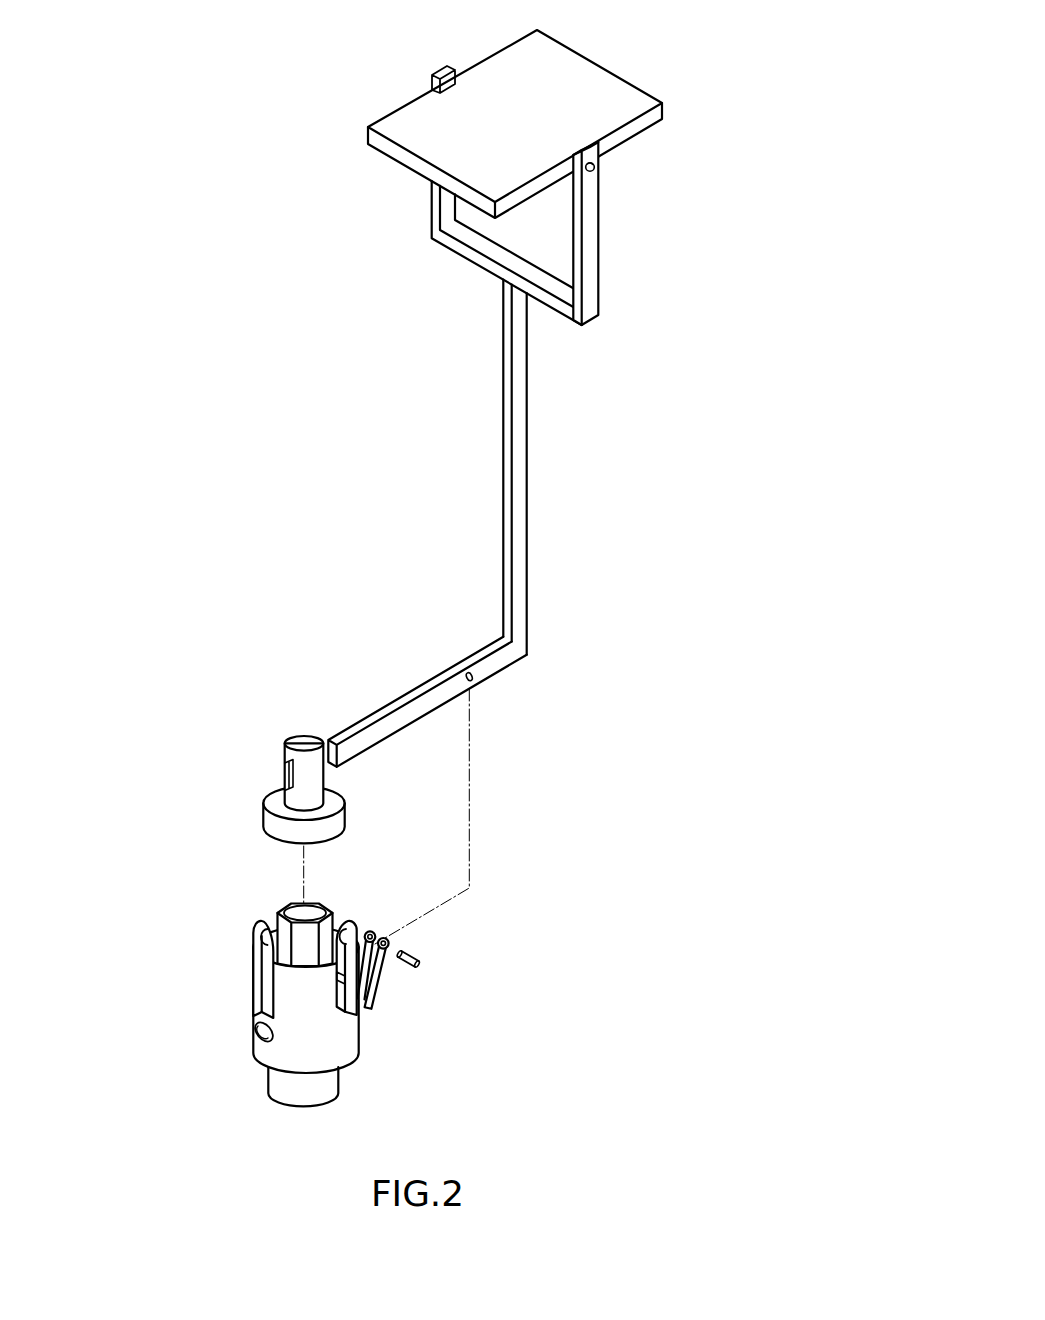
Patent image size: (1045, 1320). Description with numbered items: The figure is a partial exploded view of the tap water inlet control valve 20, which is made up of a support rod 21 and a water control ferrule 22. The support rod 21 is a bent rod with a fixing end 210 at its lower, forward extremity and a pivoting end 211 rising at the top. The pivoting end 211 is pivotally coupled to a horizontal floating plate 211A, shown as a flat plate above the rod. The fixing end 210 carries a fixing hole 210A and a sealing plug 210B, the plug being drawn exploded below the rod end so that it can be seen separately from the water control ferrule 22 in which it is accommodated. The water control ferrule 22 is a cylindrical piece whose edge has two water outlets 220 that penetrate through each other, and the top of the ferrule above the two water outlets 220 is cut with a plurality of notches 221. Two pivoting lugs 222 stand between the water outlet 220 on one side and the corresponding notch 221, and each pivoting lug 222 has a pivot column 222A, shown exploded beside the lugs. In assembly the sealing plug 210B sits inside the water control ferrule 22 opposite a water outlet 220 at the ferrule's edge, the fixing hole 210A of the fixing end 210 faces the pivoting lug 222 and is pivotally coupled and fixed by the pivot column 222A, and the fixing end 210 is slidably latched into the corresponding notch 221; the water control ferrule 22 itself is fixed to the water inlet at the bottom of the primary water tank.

The tap water inlet control valve 20 is at (622, 662).
The support rod 21 is at (528, 527).
The fixing end 210 is at (500, 658).
The fixing hole 210A is at (473, 683).
The sealing plug 210B is at (285, 752).
The pivoting end 211 is at (593, 243).
The horizontal floating plate 211A is at (543, 83).
The water control ferrule 22 is at (355, 1034).
The water outlets 220 is at (253, 1035).
The notches 221 is at (343, 997).
The pivoting lugs 222 is at (377, 972).
The pivot column 222A is at (418, 958).